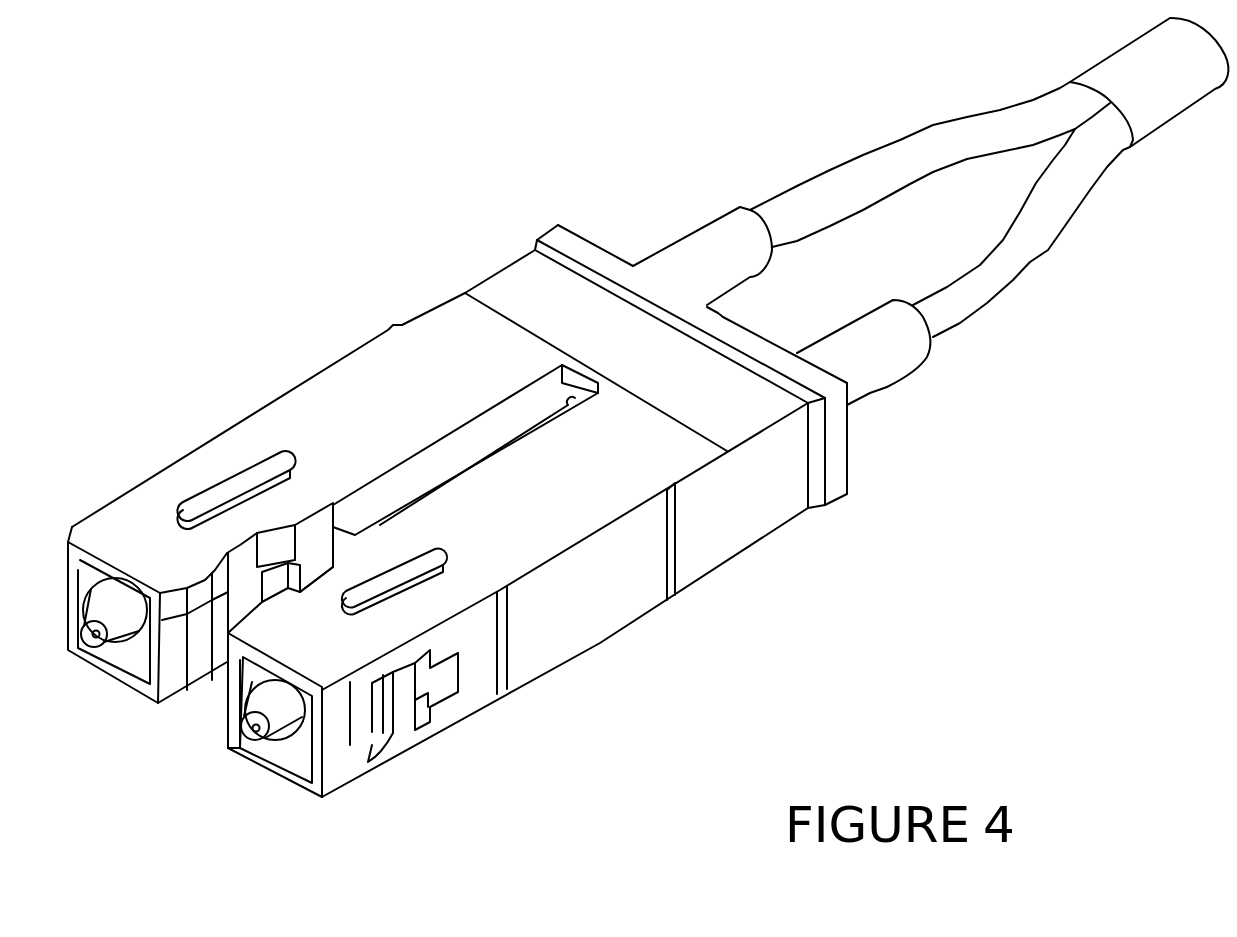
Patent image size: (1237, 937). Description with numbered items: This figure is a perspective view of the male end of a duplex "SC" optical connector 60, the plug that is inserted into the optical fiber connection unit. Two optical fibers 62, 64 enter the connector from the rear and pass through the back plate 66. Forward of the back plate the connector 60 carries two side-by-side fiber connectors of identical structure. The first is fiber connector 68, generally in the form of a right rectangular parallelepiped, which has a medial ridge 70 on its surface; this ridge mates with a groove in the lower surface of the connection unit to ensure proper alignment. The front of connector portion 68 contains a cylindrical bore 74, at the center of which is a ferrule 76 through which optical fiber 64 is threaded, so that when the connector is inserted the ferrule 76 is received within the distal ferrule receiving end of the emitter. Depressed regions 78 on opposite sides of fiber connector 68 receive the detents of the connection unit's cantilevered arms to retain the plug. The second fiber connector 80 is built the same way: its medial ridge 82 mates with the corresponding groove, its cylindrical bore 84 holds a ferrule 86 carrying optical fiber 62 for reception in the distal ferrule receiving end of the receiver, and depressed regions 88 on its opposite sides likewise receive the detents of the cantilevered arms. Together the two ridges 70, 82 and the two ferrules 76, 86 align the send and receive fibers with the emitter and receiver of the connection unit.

The duplex "SC" connector 60 is at (350, 270).
The optical fiber 62 is at (850, 174).
The optical fiber 64 is at (983, 290).
The back plate 66 is at (835, 430).
The fiber connector 68 is at (390, 637).
The medial ridge 70 is at (440, 545).
The cylindrical bore 74 is at (290, 745).
The ferrule 76 is at (261, 742).
The depressed regions 78 is at (400, 710).
The fiber connector 80 is at (147, 497).
The medial ridge 82 is at (247, 480).
The cylindrical bore 84 is at (130, 650).
The ferrule 86 is at (95, 640).
The depressed regions 88 is at (248, 583).